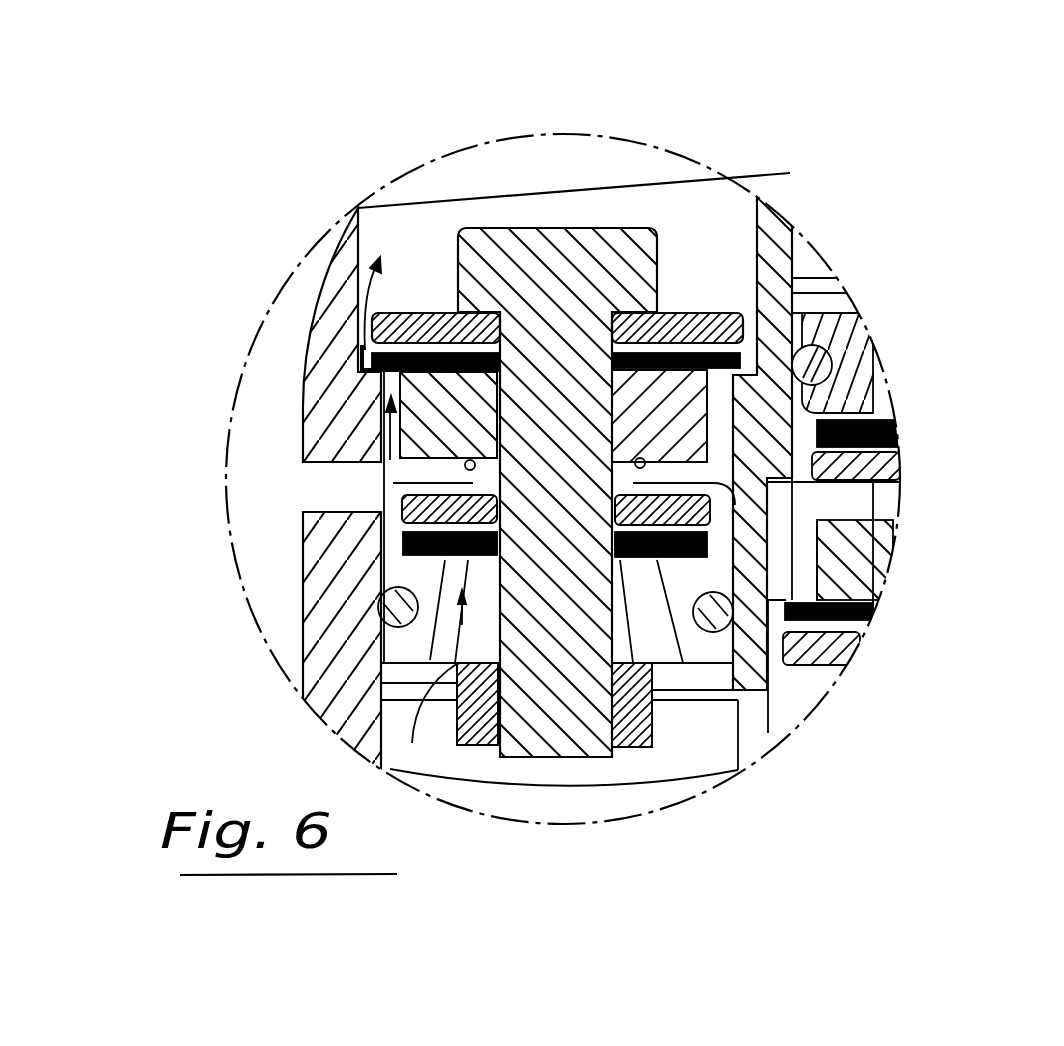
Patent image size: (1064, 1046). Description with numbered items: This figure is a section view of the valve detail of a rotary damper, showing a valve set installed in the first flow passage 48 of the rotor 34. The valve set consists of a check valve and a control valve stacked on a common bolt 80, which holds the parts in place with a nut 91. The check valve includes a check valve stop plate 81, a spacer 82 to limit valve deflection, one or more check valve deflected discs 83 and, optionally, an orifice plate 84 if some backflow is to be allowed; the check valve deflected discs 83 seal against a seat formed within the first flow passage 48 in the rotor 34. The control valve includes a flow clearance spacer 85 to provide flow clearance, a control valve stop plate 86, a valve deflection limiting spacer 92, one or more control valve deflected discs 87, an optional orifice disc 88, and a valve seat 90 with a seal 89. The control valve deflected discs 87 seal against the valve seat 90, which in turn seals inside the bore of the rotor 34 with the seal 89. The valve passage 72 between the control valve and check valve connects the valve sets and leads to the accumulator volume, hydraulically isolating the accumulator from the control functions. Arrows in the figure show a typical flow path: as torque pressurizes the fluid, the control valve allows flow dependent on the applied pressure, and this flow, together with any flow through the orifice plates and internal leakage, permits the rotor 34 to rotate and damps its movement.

The rotor 34 is at (772, 701).
The first flow passage 48 is at (738, 260).
The valve passage 72 is at (752, 488).
The bolt 80 is at (535, 215).
The check valve stop plate 81 is at (400, 308).
The spacer 82 is at (470, 352).
The check valve deflected discs 83 is at (356, 336).
The orifice plate 84 is at (358, 373).
The flow clearance spacer 85 is at (473, 484).
The control valve stop plate 86 is at (398, 508).
The control valve deflected discs 87 is at (400, 543).
The orifice disc 88 is at (400, 565).
The seal 89 is at (735, 675).
The valve seat 90 is at (677, 667).
The nut 91 is at (633, 747).
The valve deflection limiting spacer 92 is at (382, 606).